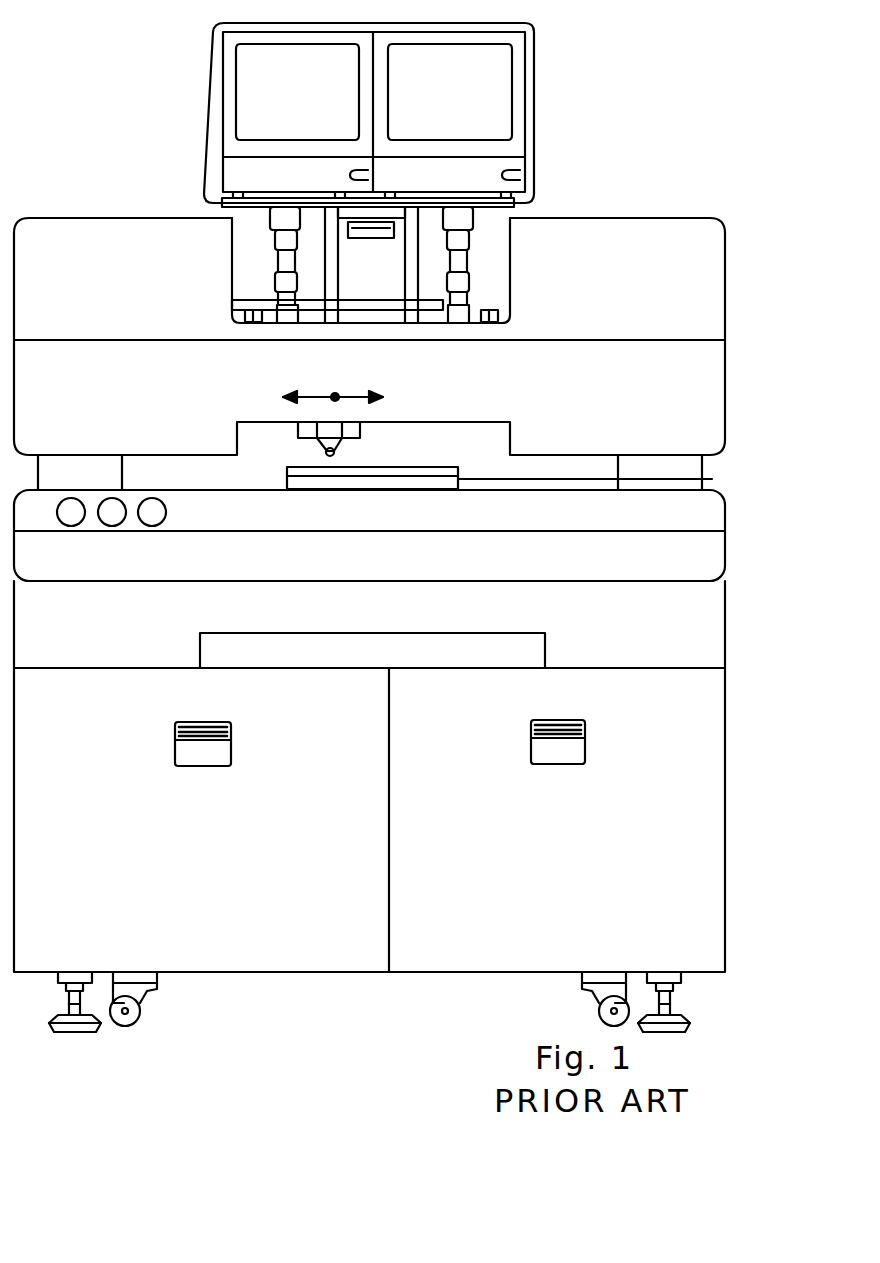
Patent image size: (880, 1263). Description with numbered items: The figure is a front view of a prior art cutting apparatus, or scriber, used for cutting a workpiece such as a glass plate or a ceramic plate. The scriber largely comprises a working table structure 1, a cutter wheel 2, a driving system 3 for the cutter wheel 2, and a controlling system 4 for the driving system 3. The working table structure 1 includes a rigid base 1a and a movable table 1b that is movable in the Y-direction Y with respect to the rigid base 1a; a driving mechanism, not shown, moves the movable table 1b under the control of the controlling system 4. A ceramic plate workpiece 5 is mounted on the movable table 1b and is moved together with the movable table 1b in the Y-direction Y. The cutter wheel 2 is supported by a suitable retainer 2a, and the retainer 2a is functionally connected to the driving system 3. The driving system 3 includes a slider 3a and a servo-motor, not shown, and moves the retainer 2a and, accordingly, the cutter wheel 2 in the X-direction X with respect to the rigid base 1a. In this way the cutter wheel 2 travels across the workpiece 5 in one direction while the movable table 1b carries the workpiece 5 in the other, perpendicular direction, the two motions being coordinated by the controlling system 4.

The working table structure 1 is at (793, 517).
The rigid base 1a is at (726, 558).
The movable table 1b is at (712, 479).
The cutter wheel 2 is at (340, 451).
The retainer 2a is at (333, 444).
The driving system 3 is at (289, 442).
The slider 3a is at (300, 430).
The controlling system 4 is at (577, 206).
The ceramic plate workpiece 5 is at (455, 463).
The X-direction X is at (383, 397).
The Y-direction Y is at (283, 397).